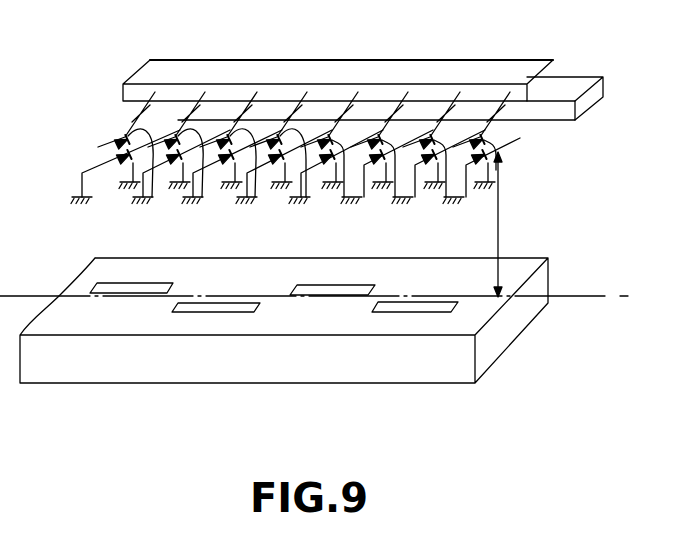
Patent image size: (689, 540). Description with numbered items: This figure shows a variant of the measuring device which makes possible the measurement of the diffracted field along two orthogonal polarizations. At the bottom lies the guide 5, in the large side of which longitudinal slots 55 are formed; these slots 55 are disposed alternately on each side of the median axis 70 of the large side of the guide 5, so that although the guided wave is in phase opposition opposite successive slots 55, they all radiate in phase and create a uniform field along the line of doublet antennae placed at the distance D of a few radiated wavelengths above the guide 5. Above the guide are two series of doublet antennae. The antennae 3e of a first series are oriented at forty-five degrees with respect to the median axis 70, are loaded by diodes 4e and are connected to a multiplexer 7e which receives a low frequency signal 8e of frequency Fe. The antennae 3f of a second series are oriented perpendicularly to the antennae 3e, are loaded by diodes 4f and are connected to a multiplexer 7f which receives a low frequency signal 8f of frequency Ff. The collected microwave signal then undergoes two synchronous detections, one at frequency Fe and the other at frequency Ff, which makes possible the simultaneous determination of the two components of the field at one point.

The low frequency signal Bf 8f is at (360, 60).
The low frequency signal Be 8e is at (420, 60).
The multiplexer 7f is at (515, 97).
The multiplexer 7e is at (560, 110).
The antennae of a second series 3f is at (163, 130).
The antennae of a first series 3e is at (405, 158).
The diodes 4f is at (206, 178).
The diodes 4e is at (443, 195).
The guide 5 is at (518, 276).
The slots 55 is at (417, 312).
The median axis 70 is at (577, 298).
The distance D is at (509, 224).